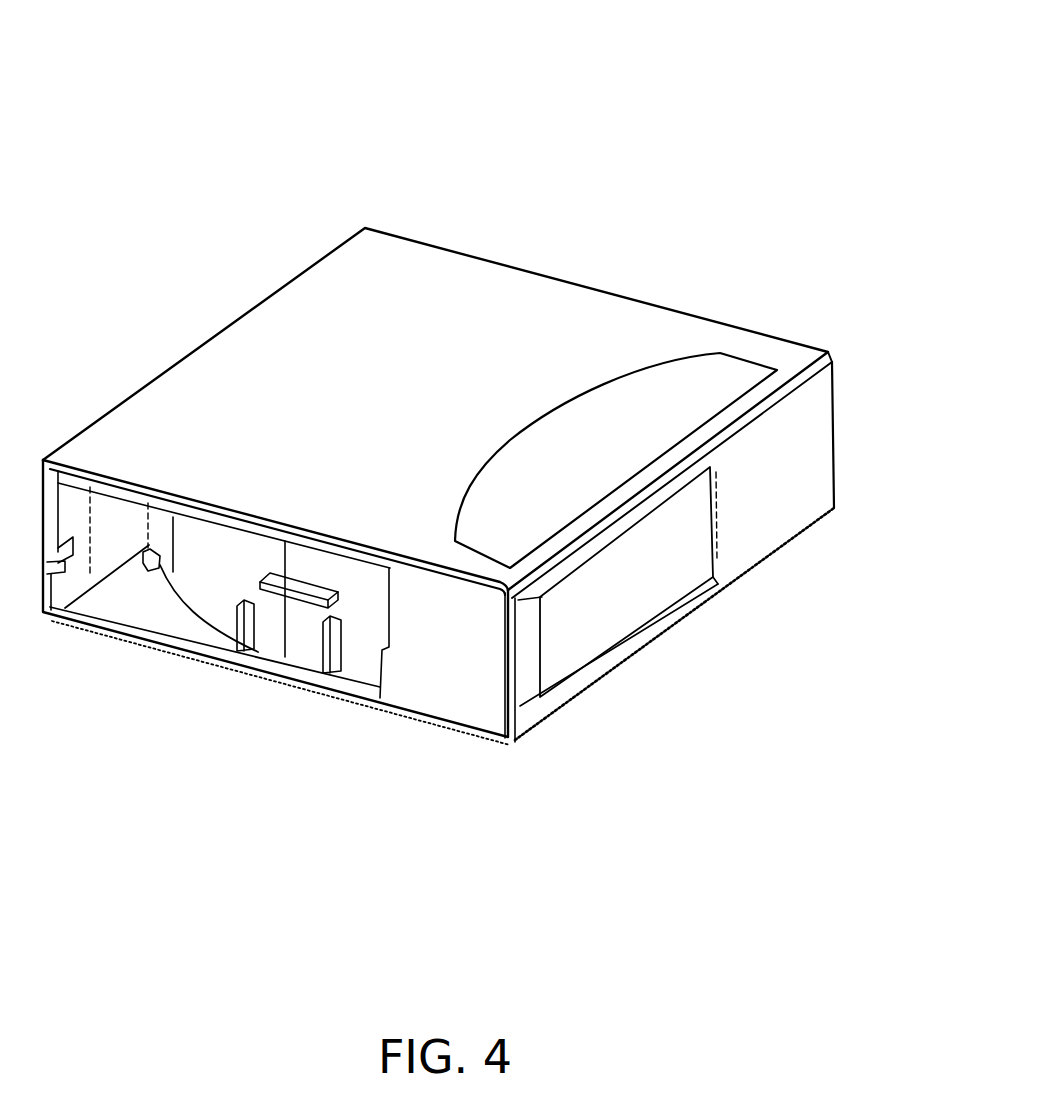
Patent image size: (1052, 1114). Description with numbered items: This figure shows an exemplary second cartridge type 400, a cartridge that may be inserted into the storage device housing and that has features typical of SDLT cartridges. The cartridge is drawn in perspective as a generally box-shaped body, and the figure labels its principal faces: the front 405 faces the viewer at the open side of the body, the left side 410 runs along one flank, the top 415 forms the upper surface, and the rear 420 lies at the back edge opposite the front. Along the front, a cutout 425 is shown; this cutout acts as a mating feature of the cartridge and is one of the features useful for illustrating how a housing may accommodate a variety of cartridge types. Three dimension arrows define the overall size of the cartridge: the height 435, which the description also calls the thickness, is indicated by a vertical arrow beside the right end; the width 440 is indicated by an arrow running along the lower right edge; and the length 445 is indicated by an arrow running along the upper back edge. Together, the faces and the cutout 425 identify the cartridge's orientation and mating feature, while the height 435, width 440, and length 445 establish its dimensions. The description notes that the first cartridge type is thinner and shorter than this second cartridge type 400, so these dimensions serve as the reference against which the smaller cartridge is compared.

The second cartridge type 400 is at (148, 168).
The front 405 is at (523, 603).
The left side 410 is at (407, 633).
The top 415 is at (257, 383).
The rear 420 is at (177, 363).
The cutout (mating feature) 425 is at (125, 598).
The height 435 is at (852, 510).
The width 440 is at (527, 748).
The length 445 is at (377, 200).